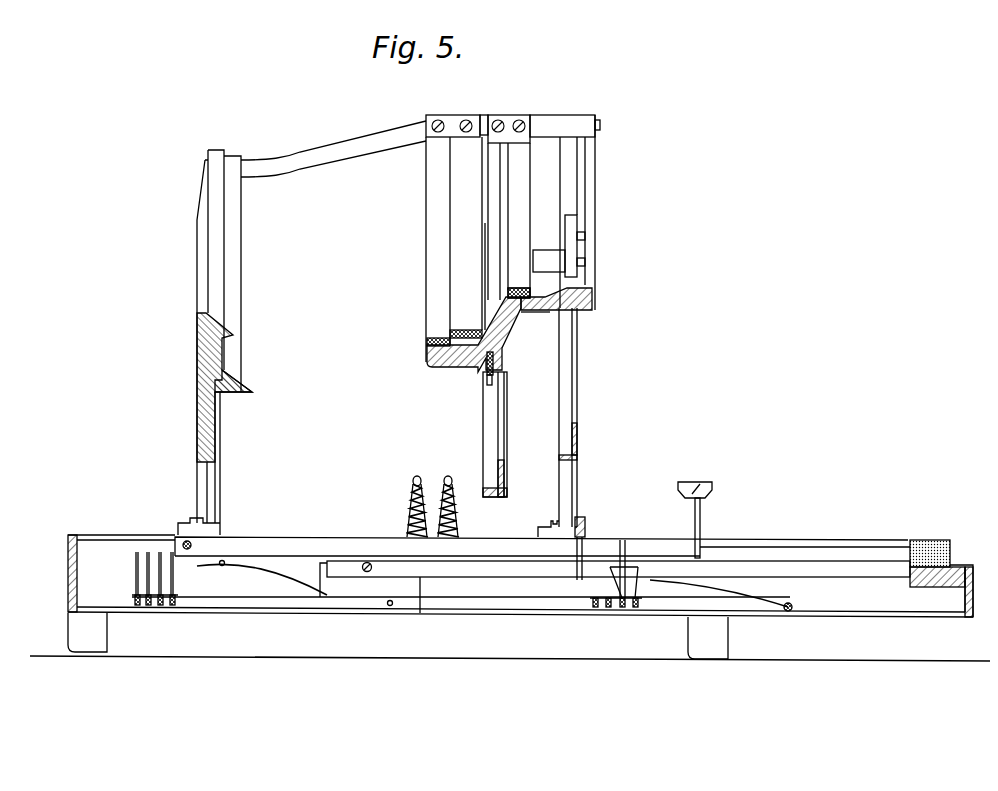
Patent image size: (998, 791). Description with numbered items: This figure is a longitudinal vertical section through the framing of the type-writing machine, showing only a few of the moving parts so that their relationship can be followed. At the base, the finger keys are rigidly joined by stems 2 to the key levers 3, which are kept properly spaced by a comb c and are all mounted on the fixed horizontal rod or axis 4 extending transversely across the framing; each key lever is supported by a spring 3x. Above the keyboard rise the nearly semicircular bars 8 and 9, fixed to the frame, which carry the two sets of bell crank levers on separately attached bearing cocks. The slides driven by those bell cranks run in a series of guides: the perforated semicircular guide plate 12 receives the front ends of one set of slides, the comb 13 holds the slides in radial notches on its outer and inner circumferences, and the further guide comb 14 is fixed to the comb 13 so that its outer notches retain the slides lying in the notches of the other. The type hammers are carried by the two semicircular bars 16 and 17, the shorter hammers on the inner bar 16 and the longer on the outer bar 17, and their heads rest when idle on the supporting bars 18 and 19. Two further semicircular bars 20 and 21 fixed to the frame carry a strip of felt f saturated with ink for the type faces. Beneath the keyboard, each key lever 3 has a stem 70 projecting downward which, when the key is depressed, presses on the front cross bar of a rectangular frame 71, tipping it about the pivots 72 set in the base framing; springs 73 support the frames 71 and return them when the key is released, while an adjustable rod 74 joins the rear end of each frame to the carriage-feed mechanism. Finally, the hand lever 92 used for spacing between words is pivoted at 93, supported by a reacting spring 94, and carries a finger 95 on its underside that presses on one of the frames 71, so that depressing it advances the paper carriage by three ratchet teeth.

The stem 2 is at (700, 520).
The lever 3 is at (520, 596).
The spring 3x is at (399, 517).
The horizontal rod or axis 4 is at (187, 550).
The semicircular bar 8 is at (561, 422).
The semicircular bar 9 is at (495, 434).
The semicircular guide plate 12 is at (596, 233).
The comb 13 is at (492, 380).
The guide comb 14 is at (494, 357).
The semicircular bar 16 is at (210, 320).
The semicircular bar 17 is at (250, 386).
The supporting bar 18 is at (438, 333).
The supporting bar 19 is at (509, 296).
The semicircular bar 20 is at (450, 368).
The semicircular bar 21 is at (512, 313).
The stem 70 is at (630, 590).
The rectangular frame 71 is at (137, 605).
The pivot 72 is at (392, 608).
The spring 73 is at (253, 575).
The adjustable rod 74 is at (171, 573).
The hand lever 92 is at (642, 566).
The pivot 93 is at (367, 562).
The reacting spring 94 is at (735, 598).
The finger 95 is at (627, 565).
The comb c is at (583, 548).
The strip of felt f is at (490, 302).